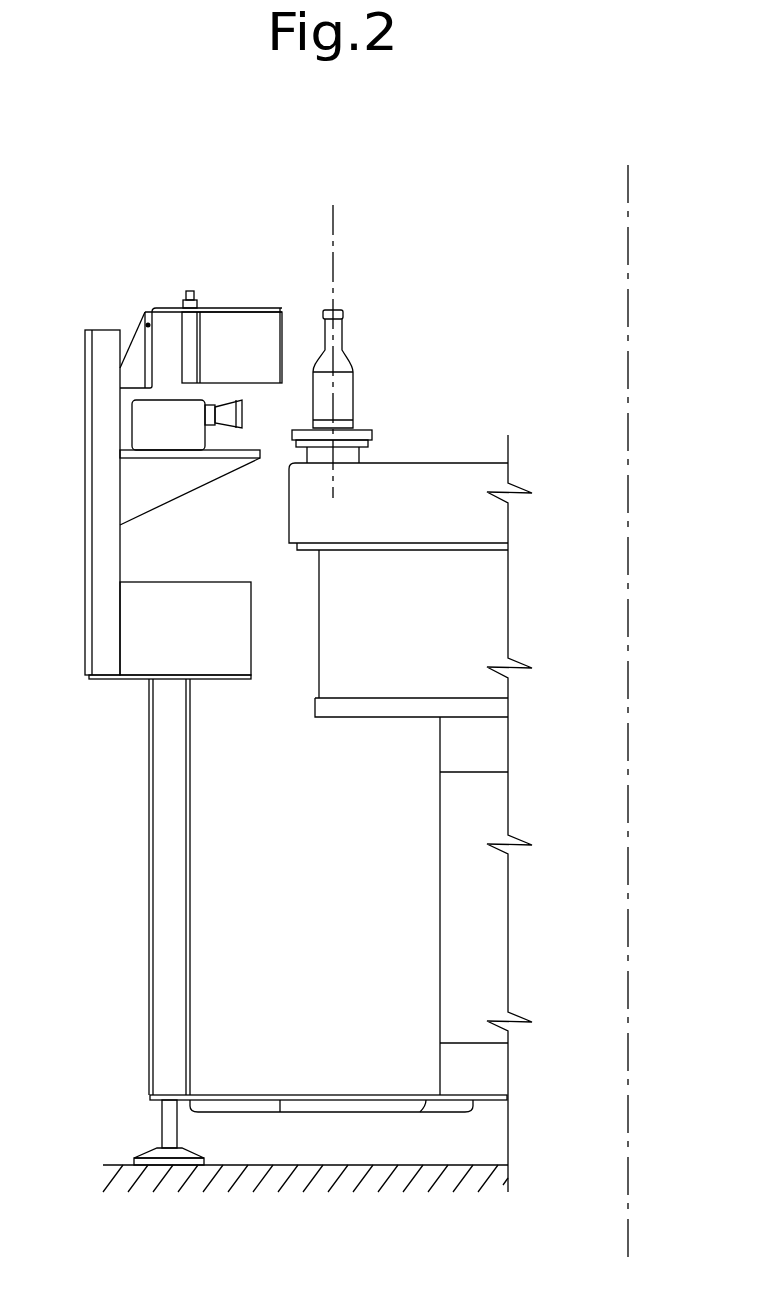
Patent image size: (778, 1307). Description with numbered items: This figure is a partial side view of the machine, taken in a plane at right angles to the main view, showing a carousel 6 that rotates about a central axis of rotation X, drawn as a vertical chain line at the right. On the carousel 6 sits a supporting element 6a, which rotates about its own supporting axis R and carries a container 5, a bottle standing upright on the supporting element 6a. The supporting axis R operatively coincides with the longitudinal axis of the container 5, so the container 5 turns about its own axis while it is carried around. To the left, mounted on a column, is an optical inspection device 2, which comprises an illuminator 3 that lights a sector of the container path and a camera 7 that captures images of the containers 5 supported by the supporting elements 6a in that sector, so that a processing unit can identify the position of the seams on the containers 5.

The optical inspection device 2 is at (99, 312).
The illuminator 3 is at (166, 298).
The container 5 is at (355, 326).
The carousel 6 is at (450, 445).
The supporting element 6a is at (372, 437).
The camera 7 is at (163, 432).
The supporting axis R is at (335, 255).
The central axis of rotation X is at (628, 375).